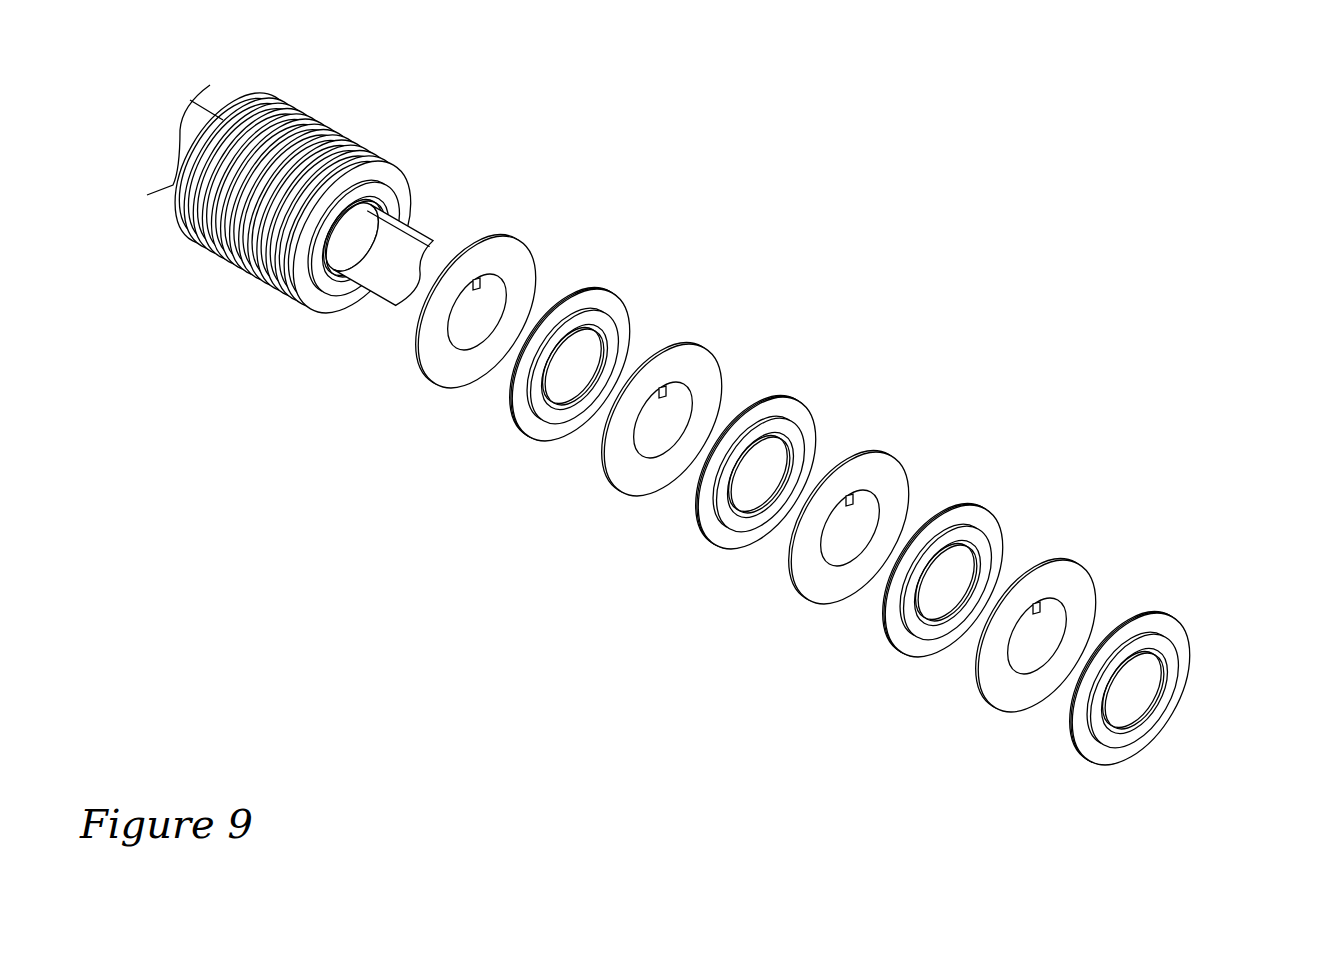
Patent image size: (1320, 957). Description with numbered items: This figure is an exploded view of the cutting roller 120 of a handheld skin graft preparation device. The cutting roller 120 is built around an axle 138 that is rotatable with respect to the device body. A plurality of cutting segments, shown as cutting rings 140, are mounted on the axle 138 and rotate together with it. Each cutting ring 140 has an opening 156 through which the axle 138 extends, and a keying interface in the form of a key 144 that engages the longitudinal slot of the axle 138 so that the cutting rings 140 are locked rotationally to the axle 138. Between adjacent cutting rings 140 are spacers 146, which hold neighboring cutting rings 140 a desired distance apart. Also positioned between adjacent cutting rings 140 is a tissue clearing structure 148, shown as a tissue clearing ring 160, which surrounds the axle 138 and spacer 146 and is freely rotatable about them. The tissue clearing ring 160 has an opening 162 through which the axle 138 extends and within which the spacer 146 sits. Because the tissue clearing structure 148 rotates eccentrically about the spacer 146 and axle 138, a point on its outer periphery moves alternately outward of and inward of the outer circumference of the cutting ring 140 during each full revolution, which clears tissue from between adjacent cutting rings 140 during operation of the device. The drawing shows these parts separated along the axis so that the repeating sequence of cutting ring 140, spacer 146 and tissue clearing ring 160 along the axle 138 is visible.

The cutting roller 120 is at (962, 268).
The axle 138 is at (200, 112).
The cutting rings 140 is at (292, 307).
The key 144 is at (477, 287).
The spacers 146 is at (330, 292).
The tissue clearing structure 148 is at (517, 422).
The opening 156 is at (495, 290).
The tissue clearing ring 160 is at (373, 162).
The opening 162 is at (547, 423).